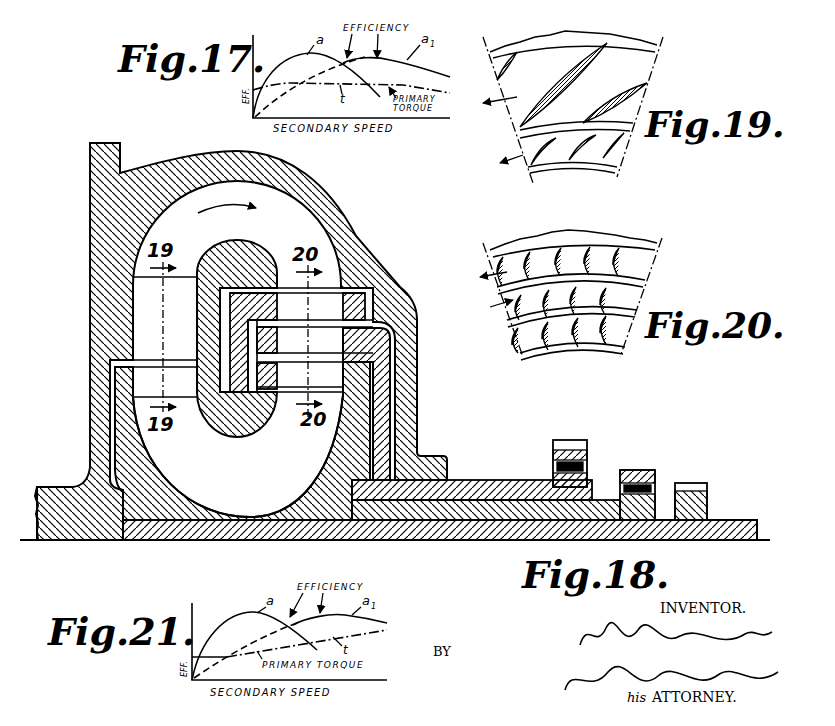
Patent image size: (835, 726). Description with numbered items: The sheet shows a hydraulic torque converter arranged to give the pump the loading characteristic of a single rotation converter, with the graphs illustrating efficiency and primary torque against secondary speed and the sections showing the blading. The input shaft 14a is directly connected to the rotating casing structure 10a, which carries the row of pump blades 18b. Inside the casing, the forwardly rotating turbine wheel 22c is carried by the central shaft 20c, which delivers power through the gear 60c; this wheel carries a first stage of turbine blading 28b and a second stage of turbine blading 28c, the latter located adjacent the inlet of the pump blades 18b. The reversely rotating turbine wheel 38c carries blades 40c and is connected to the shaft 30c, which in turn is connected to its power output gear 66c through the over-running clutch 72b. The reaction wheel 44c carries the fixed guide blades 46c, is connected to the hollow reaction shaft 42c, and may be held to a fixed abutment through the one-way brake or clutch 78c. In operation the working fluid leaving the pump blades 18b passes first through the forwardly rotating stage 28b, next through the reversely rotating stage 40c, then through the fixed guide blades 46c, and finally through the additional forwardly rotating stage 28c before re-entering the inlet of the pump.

In FIG. 18, the rotating casing structure 10a is at (318, 190).
In FIG. 18, the input shaft 14a is at (48, 500).
In FIG. 19, the pump blades 18b is at (577, 77).
In FIG. 18, the pump blades 18b is at (170, 289).
In FIG. 18, the central shaft 20c is at (495, 538).
In FIG. 18, the forwardly rotating turbine wheel 22c is at (148, 479).
In FIG. 20, the first stage of turbine blading 28b is at (563, 252).
In FIG. 18, the first stage of turbine blading 28b is at (288, 301).
In FIG. 19, the second stage of turbine blading 28c is at (560, 163).
In FIG. 18, the second stage of turbine blading 28c is at (144, 378).
In FIG. 18, the shaft 30c is at (490, 472).
In FIG. 18, the reversely rotating turbine wheel 38c is at (385, 391).
In FIG. 20, the blades 40c is at (643, 293).
In FIG. 18, the blades 40c is at (318, 334).
In FIG. 18, the hollow reaction shaft 42c is at (443, 523).
In FIG. 18, the reaction wheel 44c is at (310, 493).
In FIG. 20, the fixed guide blades 46c is at (582, 336).
In FIG. 18, the fixed guide blades 46c is at (292, 389).
In FIG. 18, the gear 60c is at (707, 497).
In FIG. 18, the power output gear 66c is at (584, 457).
In FIG. 18, the over-running clutch 72b is at (559, 466).
In FIG. 18, the one-way brake or clutch 78c is at (657, 483).